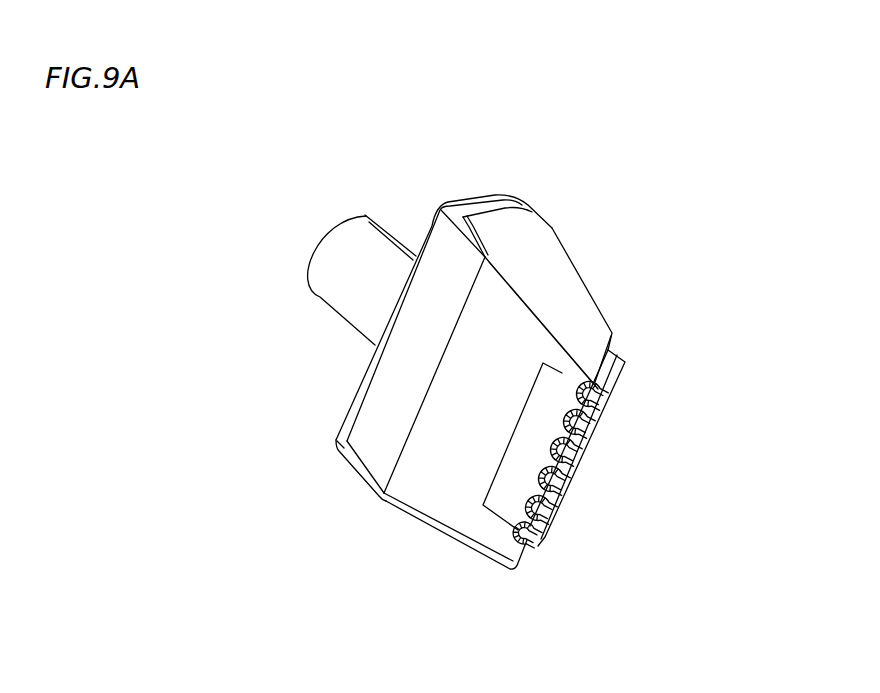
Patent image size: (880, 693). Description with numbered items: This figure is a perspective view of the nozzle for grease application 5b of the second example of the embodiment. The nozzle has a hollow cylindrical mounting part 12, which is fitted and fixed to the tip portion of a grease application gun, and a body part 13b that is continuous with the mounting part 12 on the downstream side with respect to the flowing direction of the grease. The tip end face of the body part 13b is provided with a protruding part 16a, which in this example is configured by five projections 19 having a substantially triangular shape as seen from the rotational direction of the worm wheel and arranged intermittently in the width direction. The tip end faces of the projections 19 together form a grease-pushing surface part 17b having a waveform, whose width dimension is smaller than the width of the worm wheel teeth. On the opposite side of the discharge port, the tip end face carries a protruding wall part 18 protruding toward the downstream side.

The nozzle for grease application 5b is at (292, 412).
The mounting part 12 is at (332, 255).
The body part 13b is at (533, 241).
The protruding wall part 18 is at (622, 372).
The projections 19 is at (588, 411).
The grease-pushing surface part 17b is at (590, 433).
The protruding part 16a is at (540, 538).